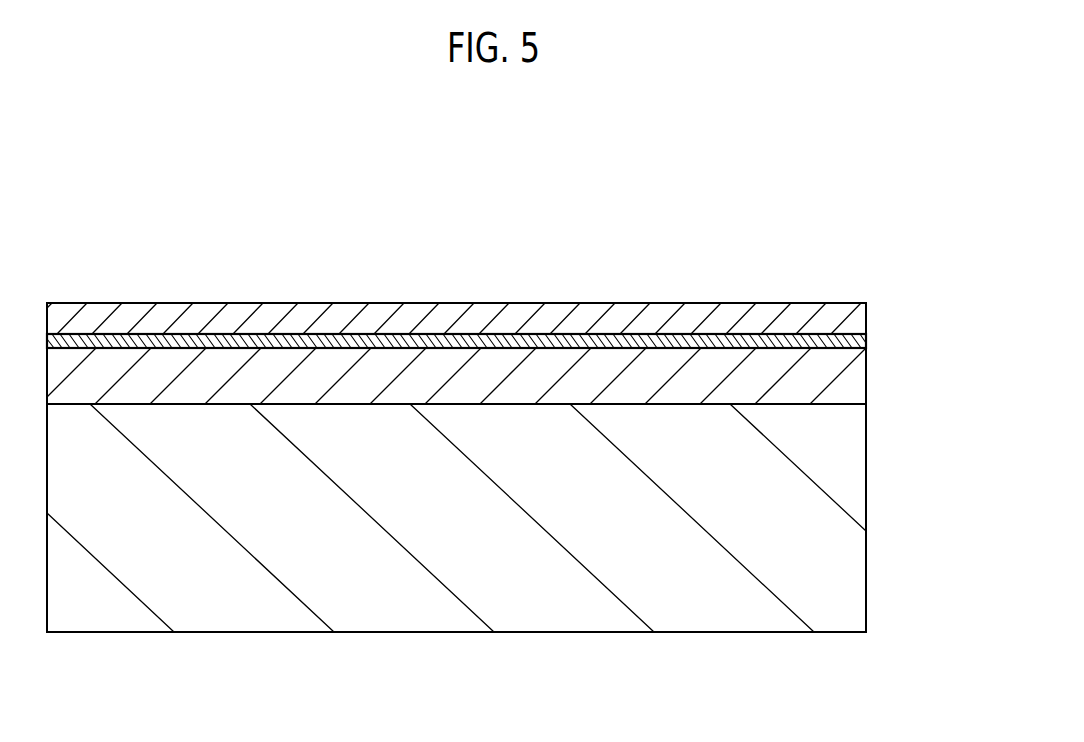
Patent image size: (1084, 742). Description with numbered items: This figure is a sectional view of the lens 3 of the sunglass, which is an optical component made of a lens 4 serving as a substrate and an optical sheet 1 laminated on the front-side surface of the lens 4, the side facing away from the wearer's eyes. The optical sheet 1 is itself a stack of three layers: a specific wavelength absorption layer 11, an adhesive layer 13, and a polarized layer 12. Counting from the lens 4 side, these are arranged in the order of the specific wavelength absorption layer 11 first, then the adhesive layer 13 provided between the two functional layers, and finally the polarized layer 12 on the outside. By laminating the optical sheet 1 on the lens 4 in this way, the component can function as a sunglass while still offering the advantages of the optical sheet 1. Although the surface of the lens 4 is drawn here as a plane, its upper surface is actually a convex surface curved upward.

The optical sheet 1 is at (204, 296).
The lens 3 is at (783, 160).
The lens 4 is at (878, 515).
The specific wavelength absorption layer 11 is at (858, 382).
The polarized layer 12 is at (857, 322).
The adhesive layer 13 is at (857, 340).